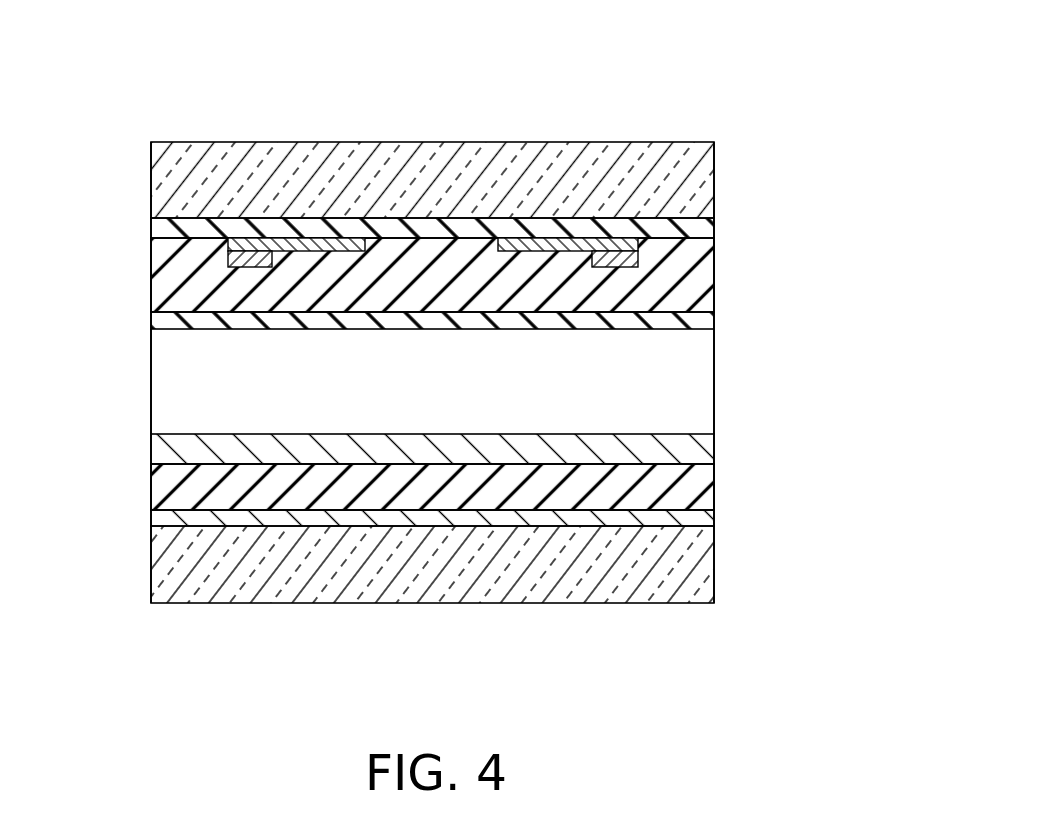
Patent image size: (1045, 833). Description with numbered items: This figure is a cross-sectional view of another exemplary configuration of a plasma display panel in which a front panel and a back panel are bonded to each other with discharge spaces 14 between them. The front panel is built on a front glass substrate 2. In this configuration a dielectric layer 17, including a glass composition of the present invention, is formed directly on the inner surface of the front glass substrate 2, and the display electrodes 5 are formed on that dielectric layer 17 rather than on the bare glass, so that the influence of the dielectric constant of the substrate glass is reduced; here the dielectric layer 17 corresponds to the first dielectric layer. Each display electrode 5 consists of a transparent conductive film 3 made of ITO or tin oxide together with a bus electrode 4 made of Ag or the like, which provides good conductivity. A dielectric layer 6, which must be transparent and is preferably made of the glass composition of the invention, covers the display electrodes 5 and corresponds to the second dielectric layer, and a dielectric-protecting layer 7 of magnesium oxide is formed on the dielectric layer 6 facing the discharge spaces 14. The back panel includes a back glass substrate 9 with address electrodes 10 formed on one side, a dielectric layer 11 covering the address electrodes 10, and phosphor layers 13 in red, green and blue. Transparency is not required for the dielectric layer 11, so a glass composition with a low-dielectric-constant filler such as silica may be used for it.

The front glass substrate 2 is at (716, 148).
The transparent conductive film 3 is at (322, 247).
The bus electrode 4 is at (258, 257).
The display electrode 5 is at (430, 134).
The dielectric layer 6 is at (715, 273).
The dielectric-protecting layer 7 is at (715, 318).
The back glass substrate 9 is at (587, 588).
The address electrode 10 is at (715, 520).
The dielectric layer 11 is at (715, 492).
The phosphor layer 13 is at (717, 448).
The discharge space 14 is at (203, 396).
The dielectric layer 17 is at (715, 227).